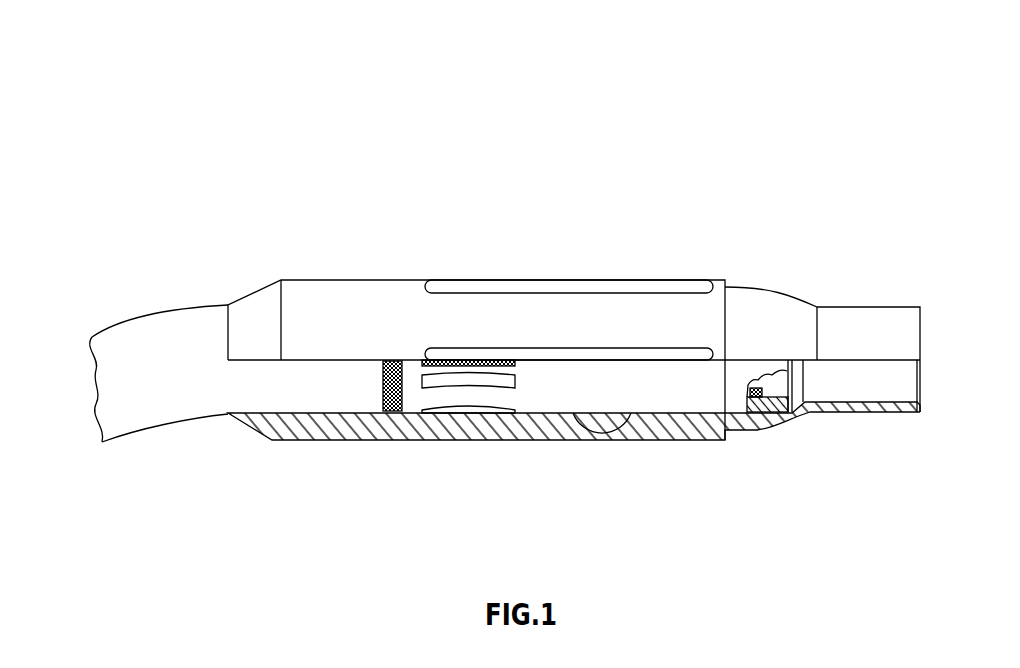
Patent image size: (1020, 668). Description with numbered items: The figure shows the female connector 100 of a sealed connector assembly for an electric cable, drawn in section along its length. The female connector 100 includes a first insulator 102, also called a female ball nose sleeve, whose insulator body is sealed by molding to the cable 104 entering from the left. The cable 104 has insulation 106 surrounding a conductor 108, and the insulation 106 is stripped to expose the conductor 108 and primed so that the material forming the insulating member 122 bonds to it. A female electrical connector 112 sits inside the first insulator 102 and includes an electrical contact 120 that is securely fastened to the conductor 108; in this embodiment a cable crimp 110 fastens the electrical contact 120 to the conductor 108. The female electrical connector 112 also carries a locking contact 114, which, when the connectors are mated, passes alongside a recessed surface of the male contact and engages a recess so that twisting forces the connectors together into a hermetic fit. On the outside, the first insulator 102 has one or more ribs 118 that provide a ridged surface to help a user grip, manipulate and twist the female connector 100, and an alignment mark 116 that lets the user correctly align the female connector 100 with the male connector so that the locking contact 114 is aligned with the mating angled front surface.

The female connector 100 is at (812, 152).
The first insulator 102 is at (320, 292).
The cable 104 is at (125, 440).
The insulation 106 is at (170, 378).
The conductor 108 is at (392, 400).
The cable crimp 110 is at (452, 377).
The female electrical connector 112 is at (680, 380).
The locking contact 114 is at (762, 405).
The alignment mark 116 is at (722, 278).
The rib 118 is at (595, 287).
The electrical contact 120 is at (620, 410).
The insulating member 122 is at (545, 393).